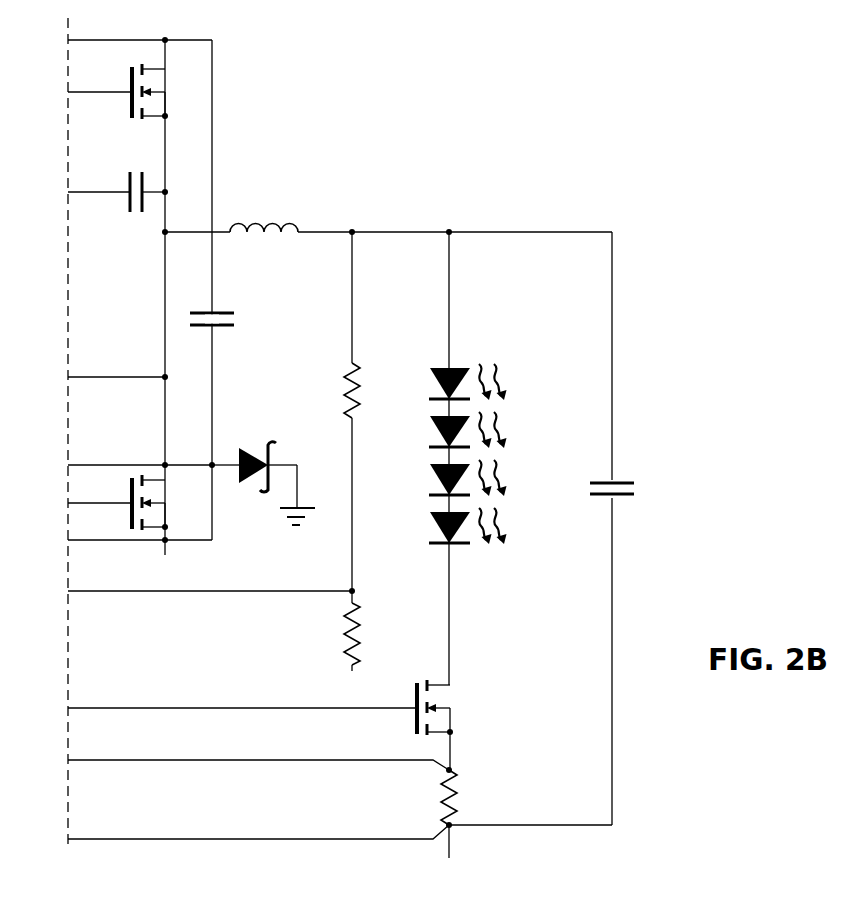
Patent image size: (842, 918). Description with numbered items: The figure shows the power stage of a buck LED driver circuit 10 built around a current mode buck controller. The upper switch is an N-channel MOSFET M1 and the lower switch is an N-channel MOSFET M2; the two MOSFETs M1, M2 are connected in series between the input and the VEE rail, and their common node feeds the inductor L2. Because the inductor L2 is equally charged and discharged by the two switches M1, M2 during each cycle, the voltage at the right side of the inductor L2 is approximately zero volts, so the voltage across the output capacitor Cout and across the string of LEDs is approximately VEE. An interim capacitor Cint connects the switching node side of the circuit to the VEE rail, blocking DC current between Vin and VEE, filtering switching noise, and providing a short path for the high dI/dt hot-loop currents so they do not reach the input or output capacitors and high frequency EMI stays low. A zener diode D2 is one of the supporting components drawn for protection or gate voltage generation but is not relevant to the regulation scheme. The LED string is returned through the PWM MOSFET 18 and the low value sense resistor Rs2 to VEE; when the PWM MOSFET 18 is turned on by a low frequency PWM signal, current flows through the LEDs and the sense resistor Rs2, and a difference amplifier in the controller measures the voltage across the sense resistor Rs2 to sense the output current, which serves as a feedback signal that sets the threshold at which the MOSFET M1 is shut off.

The LED driver circuit 10 is at (597, 160).
The PWM MOSFET 18 is at (452, 701).
The N-channel MOSFET M1 is at (168, 91).
The N-channel MOSFET M2 is at (168, 502).
The inductor L2 is at (263, 197).
The interim capacitor Cint is at (242, 308).
The diode D2 is at (263, 469).
The output capacitor Cout is at (580, 516).
The sense resistor Rs2 is at (440, 797).